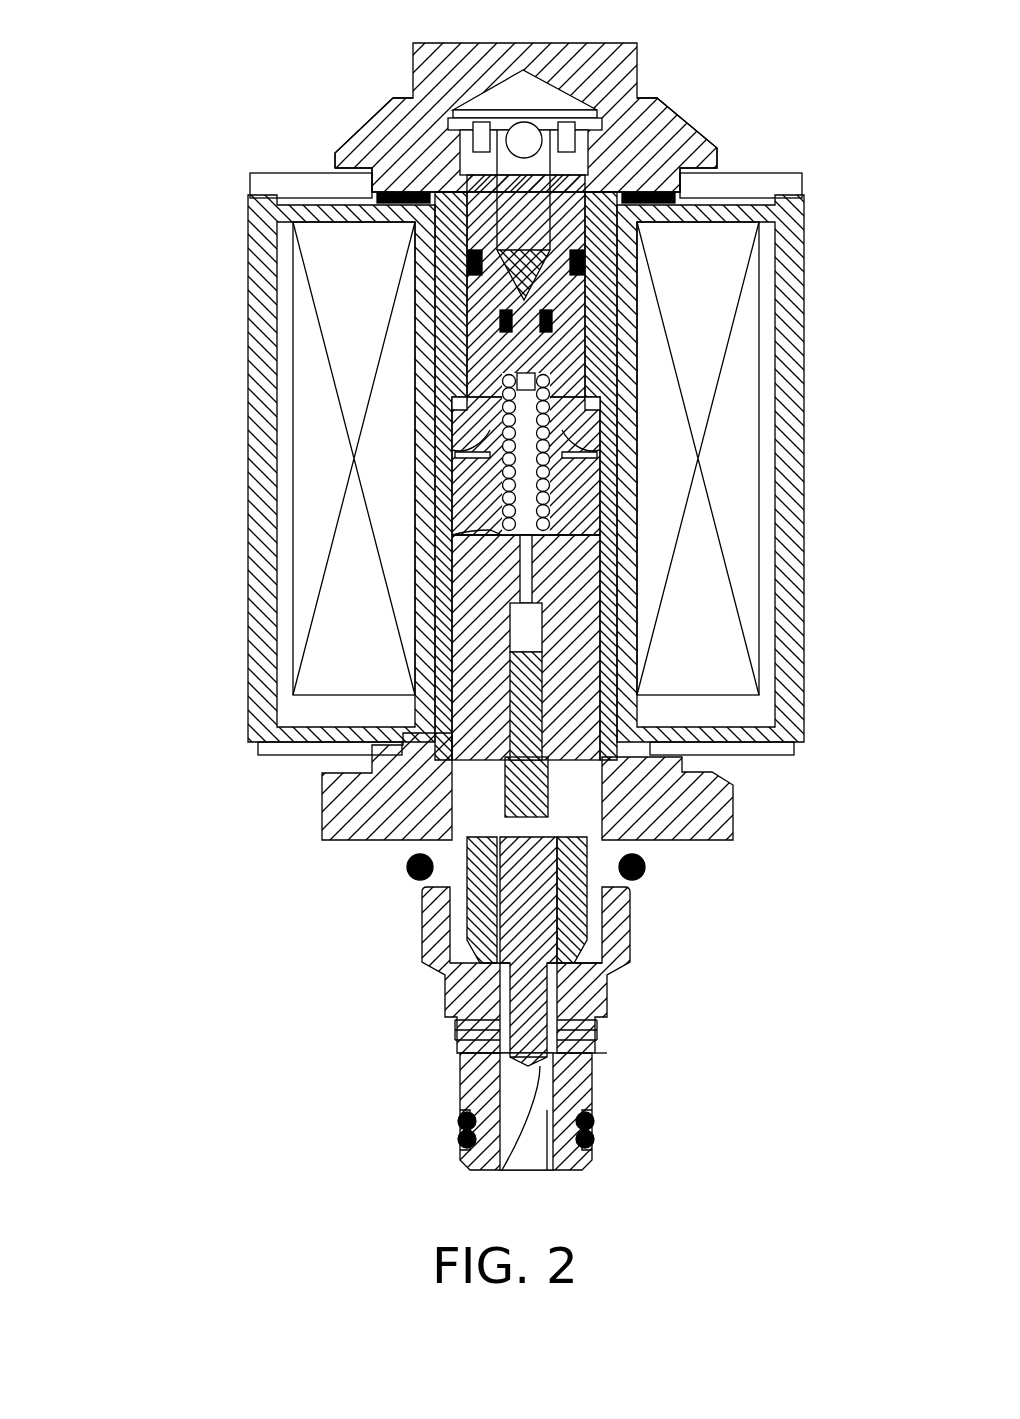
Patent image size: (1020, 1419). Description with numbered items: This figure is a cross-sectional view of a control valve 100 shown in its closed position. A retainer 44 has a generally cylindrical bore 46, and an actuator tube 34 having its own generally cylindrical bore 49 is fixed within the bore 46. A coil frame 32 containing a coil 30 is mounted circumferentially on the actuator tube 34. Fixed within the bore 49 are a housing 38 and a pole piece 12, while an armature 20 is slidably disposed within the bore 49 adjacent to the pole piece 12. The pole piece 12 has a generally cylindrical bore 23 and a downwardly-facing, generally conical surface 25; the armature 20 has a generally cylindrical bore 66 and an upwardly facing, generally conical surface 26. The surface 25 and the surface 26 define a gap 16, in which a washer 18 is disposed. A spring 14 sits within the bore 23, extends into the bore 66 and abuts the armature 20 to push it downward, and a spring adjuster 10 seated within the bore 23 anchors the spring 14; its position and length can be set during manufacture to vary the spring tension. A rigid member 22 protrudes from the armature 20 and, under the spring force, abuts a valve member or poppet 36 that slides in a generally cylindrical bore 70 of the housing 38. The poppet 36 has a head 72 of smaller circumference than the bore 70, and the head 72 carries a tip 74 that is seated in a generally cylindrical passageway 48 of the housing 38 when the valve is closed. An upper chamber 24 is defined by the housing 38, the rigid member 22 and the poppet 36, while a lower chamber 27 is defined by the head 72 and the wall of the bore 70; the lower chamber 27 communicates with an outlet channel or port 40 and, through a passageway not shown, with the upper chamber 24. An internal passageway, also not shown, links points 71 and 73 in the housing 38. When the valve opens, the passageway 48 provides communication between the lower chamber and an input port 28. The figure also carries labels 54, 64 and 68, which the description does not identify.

The control valve 100 is at (178, 405).
The spring adjuster 10 is at (597, 152).
The pole piece 12 is at (600, 332).
The spring 14 is at (603, 368).
The gap 16 is at (565, 405).
The washer 18 is at (548, 530).
The armature 20 is at (570, 628).
The rigid member 22 is at (540, 780).
The bore 23 is at (470, 130).
The upper chamber 24 is at (580, 822).
The downwardly-facing surface 25 is at (457, 410).
The upwardly facing surface 26 is at (575, 445).
The lower chamber 27 is at (590, 1037).
The input port 28 is at (547, 1170).
The coil 30 is at (327, 245).
The coil frame 32 is at (262, 333).
The actuator tube 34 is at (343, 803).
The poppet 36 is at (466, 931).
The housing 38 is at (480, 1093).
The outlet port 40 is at (460, 1027).
The retainer 44 is at (537, 185).
The bore 46 is at (580, 75).
The passageway 48 is at (502, 1170).
The bore 49 is at (463, 808).
The seal 54 is at (470, 207).
The seal ring 64 is at (478, 215).
The bore 66 is at (525, 483).
The seat 68 is at (498, 535).
The bore 70 is at (555, 995).
The point 71 is at (463, 907).
The head 72 is at (497, 1030).
The point 73 is at (497, 980).
The tip 74 is at (520, 1020).